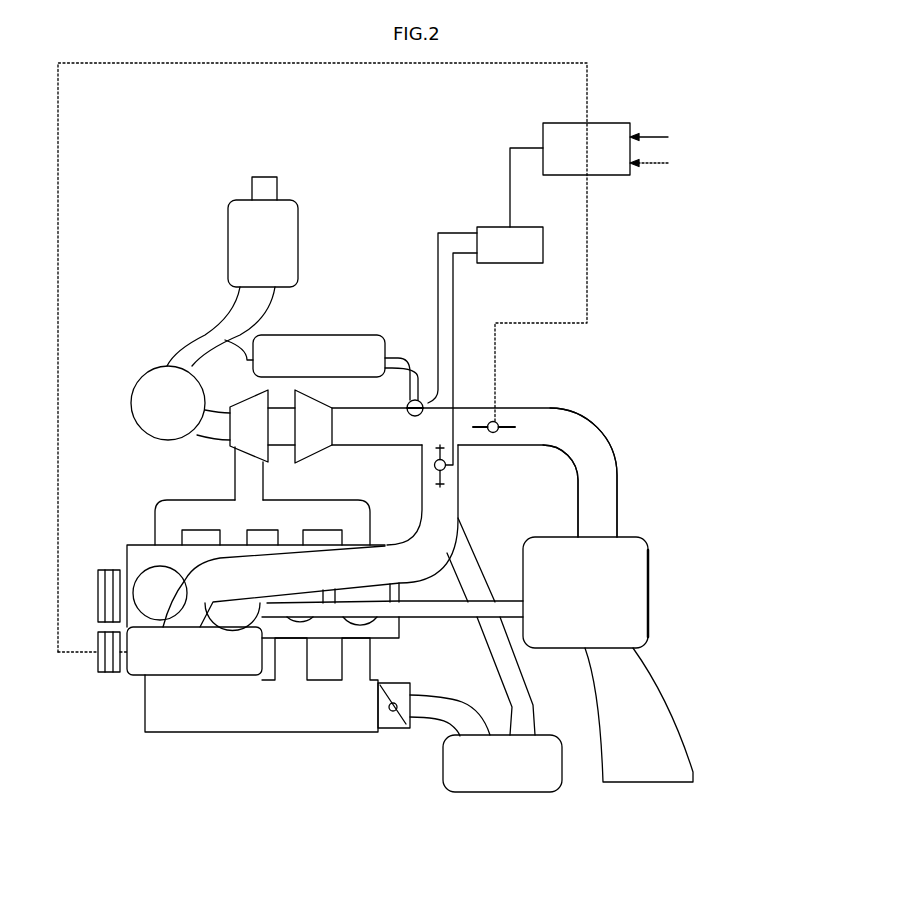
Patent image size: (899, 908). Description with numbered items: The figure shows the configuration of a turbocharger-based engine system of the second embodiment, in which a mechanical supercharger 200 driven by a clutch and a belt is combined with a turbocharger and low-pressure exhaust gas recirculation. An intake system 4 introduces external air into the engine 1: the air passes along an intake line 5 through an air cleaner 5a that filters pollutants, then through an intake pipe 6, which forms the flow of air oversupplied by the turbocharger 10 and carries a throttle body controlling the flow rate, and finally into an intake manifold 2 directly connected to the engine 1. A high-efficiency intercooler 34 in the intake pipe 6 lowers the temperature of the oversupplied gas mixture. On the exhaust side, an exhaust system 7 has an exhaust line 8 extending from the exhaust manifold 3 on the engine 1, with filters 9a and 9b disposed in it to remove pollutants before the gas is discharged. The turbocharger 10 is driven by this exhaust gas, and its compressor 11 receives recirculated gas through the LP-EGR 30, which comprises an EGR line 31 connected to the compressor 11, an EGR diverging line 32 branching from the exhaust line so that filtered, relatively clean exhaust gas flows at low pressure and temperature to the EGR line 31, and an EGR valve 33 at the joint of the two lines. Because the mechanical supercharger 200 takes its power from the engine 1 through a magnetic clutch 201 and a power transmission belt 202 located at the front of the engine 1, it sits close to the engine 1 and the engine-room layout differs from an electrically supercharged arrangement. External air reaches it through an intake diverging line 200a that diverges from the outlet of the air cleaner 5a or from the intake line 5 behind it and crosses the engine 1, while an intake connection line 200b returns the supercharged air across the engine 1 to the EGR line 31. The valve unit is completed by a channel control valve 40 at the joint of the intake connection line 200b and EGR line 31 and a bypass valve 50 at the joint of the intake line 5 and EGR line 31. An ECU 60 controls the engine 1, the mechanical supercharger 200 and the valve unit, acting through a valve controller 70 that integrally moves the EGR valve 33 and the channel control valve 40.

The engine 1 is at (138, 558).
The intake manifold 2 is at (322, 722).
The exhaust manifold 3 is at (177, 513).
The intake system 4 is at (637, 595).
The intake line 5 is at (602, 492).
The air cleaner 5a is at (618, 610).
The intake pipe 6 is at (523, 712).
The exhaust system 7 is at (182, 308).
The exhaust line 8 is at (217, 333).
The filter 9a is at (160, 385).
The filter 9b is at (247, 238).
The turbocharger 10 is at (190, 447).
The compressor 11 is at (317, 418).
The LP-EGR 30 is at (474, 377).
The EGR line 31 is at (366, 425).
The EGR diverging line 32 is at (408, 396).
The EGR valve 33 is at (431, 398).
The intercooler 34 is at (510, 778).
The channel control valve 40 is at (445, 478).
The bypass valve 50 is at (512, 418).
The ECU 60 is at (632, 122).
The valve controller 70 is at (495, 227).
The mechanical supercharger 200 is at (281, 661).
The intake diverging line 200a is at (333, 607).
The intake connection line 200b is at (247, 578).
The magnetic clutch 201 is at (148, 657).
The power transmission belt 202 is at (74, 680).